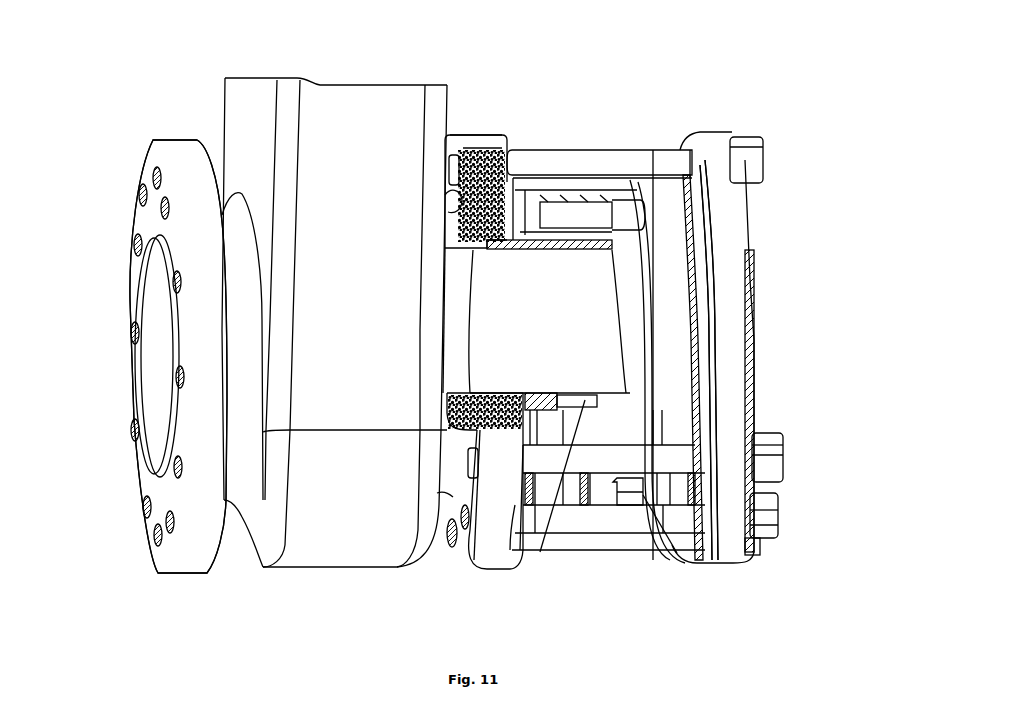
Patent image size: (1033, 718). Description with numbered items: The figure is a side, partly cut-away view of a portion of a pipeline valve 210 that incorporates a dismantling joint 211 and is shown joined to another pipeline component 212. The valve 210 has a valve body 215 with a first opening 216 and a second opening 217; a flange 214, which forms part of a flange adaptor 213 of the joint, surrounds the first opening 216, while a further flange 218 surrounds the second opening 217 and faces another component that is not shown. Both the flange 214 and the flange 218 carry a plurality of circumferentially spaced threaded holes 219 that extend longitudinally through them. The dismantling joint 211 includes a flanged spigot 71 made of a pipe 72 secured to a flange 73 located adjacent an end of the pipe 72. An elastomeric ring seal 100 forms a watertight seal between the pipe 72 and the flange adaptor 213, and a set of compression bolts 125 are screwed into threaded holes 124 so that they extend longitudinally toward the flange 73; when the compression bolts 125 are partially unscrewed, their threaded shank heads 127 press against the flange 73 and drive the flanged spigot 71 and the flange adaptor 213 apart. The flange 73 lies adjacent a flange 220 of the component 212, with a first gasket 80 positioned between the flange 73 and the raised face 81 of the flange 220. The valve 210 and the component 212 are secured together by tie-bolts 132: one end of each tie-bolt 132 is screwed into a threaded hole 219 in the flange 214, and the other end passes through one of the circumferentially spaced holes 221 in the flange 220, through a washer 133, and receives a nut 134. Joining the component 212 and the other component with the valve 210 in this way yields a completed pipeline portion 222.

The pipeline valve 210 is at (133, 145).
The flange 218 is at (183, 172).
The threaded holes 219 is at (142, 190).
The second opening 217 is at (160, 345).
The completed pipeline portion 222 is at (267, 578).
The valve body 215 is at (334, 322).
The first opening 216 is at (460, 280).
The flange adaptor 213 is at (483, 128).
The flange 214 is at (467, 130).
The elastomeric ring seal 100 is at (516, 230).
The pipe 72 is at (532, 230).
The compression bolt 125 is at (598, 190).
The dismantling joint 211 is at (622, 115).
The flange 73 is at (653, 150).
The flange 220 is at (703, 130).
The pipeline component 212 is at (726, 120).
The flanged spigot 71 is at (662, 195).
The holes 221 is at (698, 187).
The raised face 81 is at (708, 342).
The first gasket 80 is at (703, 378).
The washer 133 is at (760, 433).
The nut 134 is at (763, 452).
The threaded holes 124 is at (548, 547).
The tie-bolts 132 is at (617, 505).
The threaded shank head 127 is at (643, 497).